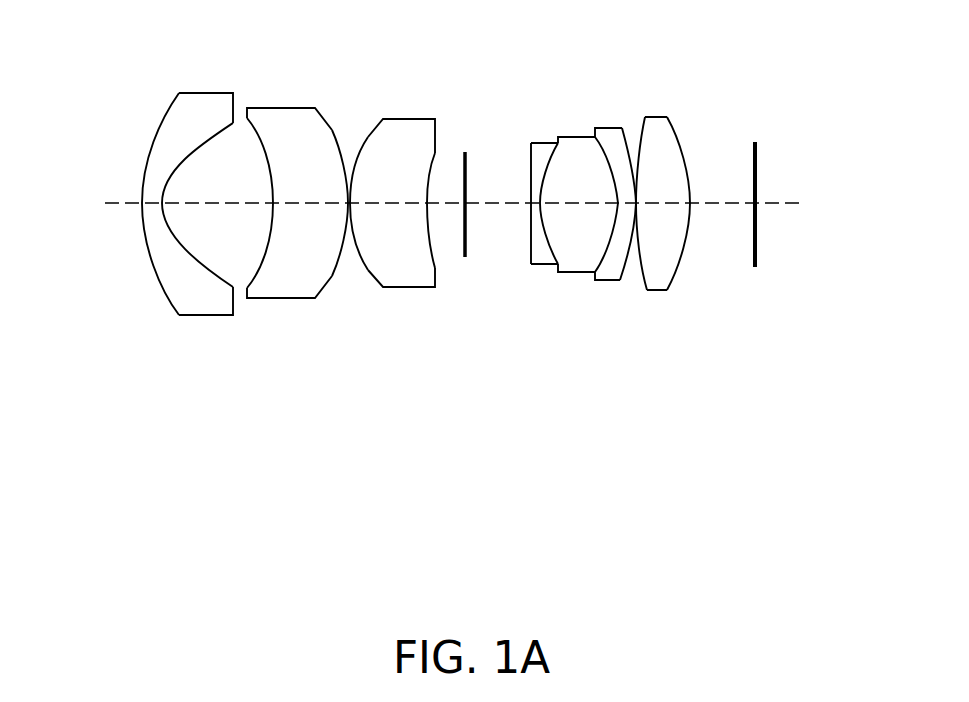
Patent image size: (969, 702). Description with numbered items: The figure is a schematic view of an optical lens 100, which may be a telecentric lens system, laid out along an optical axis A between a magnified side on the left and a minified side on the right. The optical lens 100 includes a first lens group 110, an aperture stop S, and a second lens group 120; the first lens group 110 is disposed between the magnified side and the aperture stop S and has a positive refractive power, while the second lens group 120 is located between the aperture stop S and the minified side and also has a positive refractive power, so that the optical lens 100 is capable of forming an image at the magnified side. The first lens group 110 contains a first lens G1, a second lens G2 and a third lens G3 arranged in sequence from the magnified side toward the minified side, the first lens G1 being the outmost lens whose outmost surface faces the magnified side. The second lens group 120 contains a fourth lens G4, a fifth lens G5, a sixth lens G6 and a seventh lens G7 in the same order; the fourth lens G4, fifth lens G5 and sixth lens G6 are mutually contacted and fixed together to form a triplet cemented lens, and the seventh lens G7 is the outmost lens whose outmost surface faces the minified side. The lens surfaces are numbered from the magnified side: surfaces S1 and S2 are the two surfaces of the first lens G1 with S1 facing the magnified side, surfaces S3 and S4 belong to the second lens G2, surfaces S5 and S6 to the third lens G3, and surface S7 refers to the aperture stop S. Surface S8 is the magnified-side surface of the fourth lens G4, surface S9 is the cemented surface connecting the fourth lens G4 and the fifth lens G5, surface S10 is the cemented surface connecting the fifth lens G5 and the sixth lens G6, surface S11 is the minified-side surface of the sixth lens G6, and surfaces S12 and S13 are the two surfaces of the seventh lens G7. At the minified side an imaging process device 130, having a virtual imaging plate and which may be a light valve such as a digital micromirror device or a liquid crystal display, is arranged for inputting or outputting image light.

The optical lens 100 is at (842, 448).
The first lens group 110 is at (418, 392).
The second lens group 120 is at (677, 352).
The imaging process device 130 is at (758, 255).
The optical axis A is at (123, 206).
The aperture stop S is at (470, 193).
The first lens G1 is at (187, 207).
The second lens G2 is at (297, 206).
The third lens G3 is at (399, 206).
The fourth lens G4 is at (532, 190).
The fifth lens G5 is at (588, 178).
The sixth lens G6 is at (615, 192).
The seventh lens G7 is at (679, 187).
The surface S1 is at (170, 118).
The surface S2 is at (204, 146).
The surface S3 is at (265, 156).
The surface S4 is at (333, 134).
The surface S5 is at (366, 137).
The surface S6 is at (432, 158).
The surface S7 is at (464, 173).
The surface S8 is at (529, 162).
The surface S9 is at (553, 165).
The surface S10 is at (609, 163).
The surface S11 is at (625, 134).
The surface S12 is at (643, 122).
The surface S13 is at (673, 134).